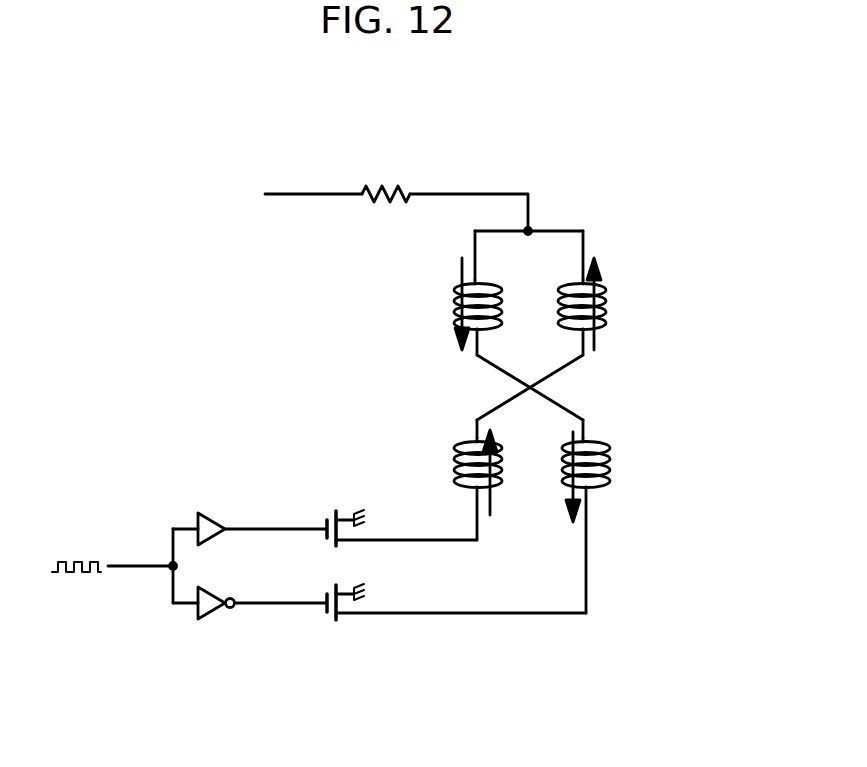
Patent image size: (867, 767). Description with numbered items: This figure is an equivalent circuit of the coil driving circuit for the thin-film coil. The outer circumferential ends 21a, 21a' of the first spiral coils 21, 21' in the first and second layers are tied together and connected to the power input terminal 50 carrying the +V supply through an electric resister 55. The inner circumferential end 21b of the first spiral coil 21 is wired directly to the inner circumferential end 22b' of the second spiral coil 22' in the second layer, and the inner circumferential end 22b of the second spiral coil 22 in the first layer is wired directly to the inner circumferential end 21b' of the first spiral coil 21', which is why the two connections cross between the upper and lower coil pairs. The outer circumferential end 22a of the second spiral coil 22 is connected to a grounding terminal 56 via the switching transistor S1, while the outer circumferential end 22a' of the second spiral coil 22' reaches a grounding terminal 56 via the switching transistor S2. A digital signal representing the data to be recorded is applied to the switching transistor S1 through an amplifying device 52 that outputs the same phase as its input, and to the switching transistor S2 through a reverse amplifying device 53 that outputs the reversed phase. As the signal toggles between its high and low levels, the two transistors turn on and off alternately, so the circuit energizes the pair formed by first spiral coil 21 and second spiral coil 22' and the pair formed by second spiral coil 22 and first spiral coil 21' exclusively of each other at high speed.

The power input terminal 50 is at (310, 193).
The electric resister 55 is at (400, 192).
The first spiral coil 21 is at (434, 306).
The first spiral coil 21' is at (632, 306).
The outer circumferential end 21a is at (455, 250).
The outer circumferential end 21a' is at (607, 254).
The inner circumferential end 21b is at (484, 387).
The inner circumferential end 21b' is at (582, 385).
The second spiral coil 22 is at (434, 485).
The second spiral coil 22' is at (638, 522).
The outer circumferential end 22a is at (449, 555).
The outer circumferential end 22a' is at (517, 623).
The inner circumferential end 22b is at (430, 416).
The inner circumferential end 22b' is at (639, 416).
The amplifying device 52 is at (211, 512).
The reverse amplifying device 53 is at (205, 620).
The grounding terminal 56 is at (352, 514).
The switching transistor S1 is at (325, 520).
The switching transistor S2 is at (326, 612).